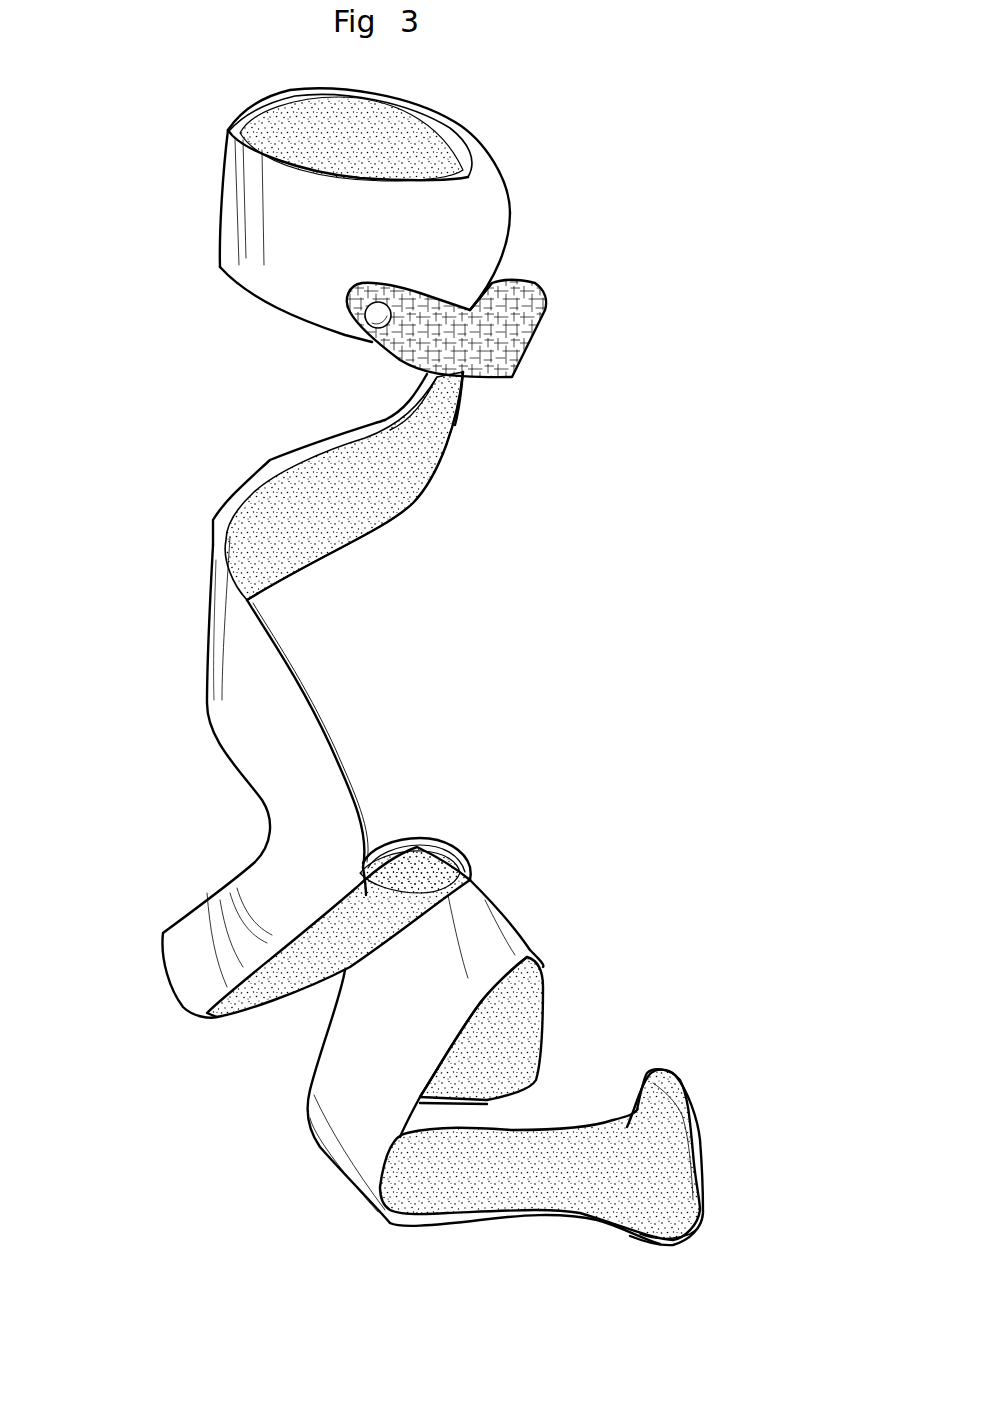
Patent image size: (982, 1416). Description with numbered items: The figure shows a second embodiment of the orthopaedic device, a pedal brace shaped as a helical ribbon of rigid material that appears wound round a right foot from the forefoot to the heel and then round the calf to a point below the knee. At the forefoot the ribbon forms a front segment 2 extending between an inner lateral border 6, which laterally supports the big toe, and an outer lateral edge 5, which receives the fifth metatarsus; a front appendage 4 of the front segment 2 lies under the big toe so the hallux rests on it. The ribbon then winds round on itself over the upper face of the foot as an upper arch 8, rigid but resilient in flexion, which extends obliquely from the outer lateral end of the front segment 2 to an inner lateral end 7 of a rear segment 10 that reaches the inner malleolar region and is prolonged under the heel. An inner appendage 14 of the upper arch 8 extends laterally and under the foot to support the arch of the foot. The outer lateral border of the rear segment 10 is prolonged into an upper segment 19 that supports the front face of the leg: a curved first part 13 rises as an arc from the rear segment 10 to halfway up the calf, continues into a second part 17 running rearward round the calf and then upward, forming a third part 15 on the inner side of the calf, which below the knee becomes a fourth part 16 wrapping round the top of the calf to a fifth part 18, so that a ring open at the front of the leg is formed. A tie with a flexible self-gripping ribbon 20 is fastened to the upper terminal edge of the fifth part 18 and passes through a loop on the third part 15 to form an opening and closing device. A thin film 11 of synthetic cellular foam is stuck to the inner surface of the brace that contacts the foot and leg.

The front segment 2 is at (525, 1192).
The front appendage 4 is at (670, 1228).
The outer lateral edge 5 is at (338, 1168).
The inner lateral border 6 is at (707, 1130).
The inner lateral end 7 is at (367, 915).
The upper arch 8 is at (347, 1055).
The rear segment 10 is at (246, 985).
The thin film 11 is at (443, 855).
The first part 13 is at (237, 815).
The inner appendage 14 is at (522, 1040).
The third part 15 is at (450, 380).
The fourth part 16 is at (212, 176).
The second part 17 is at (197, 531).
The fifth part 18 is at (460, 237).
The upper segment 19 is at (428, 628).
The flexible self-gripping ribbon 20 is at (538, 346).